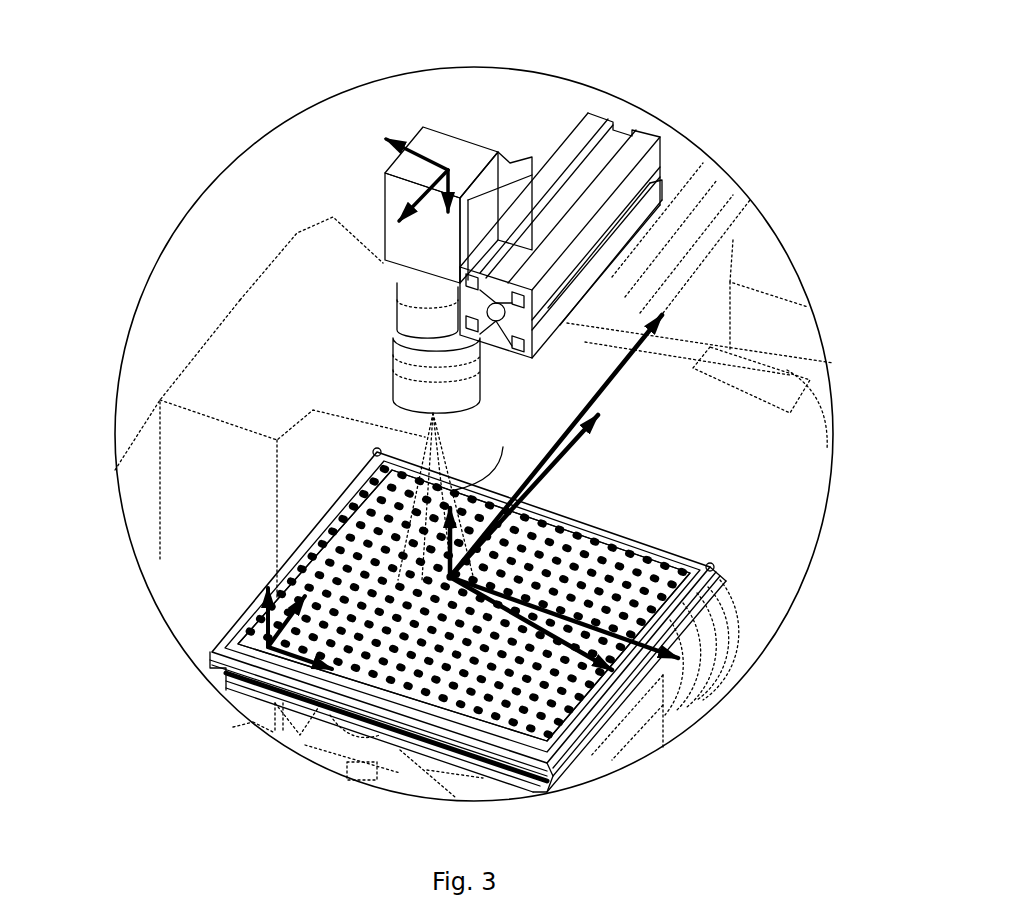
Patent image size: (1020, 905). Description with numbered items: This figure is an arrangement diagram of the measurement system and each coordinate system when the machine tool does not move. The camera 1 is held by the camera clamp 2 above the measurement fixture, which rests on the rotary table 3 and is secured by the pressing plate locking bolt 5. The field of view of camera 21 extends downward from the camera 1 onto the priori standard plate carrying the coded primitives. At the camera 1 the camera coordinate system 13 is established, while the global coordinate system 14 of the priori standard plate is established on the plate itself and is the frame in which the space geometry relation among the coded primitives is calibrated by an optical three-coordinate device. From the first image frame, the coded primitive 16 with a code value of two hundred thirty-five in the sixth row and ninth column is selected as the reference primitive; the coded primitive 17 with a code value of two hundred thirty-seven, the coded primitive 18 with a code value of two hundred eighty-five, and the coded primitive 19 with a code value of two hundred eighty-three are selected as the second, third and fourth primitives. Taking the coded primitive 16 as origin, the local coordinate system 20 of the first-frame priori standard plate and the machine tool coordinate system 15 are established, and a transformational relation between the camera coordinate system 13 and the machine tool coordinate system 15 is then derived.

The camera 1 is at (478, 140).
The camera clamp 2 is at (646, 138).
The rotary table 3 is at (572, 748).
The pressing plate locking bolt 5 is at (262, 307).
The camera coordinate system O_CX_CY_CZ_C 13 is at (397, 138).
The global coordinate system O_GX_GY_GZ_G of priori standard plate 14 is at (260, 643).
The machine tool coordinate system O_MX_MY_MZ_M 15 is at (600, 408).
The coded primitive P_1^1 16 is at (445, 592).
The coded primitive P_1^2 17 is at (583, 577).
The coded primitive P_1^3 18 is at (500, 568).
The coded primitive P_1^4 19 is at (455, 574).
The local coordinate system O_L1X_L1Y_L1Z_L1 of priori standard plate of first frame 20 is at (670, 308).
The field of view of camera 21 is at (425, 432).